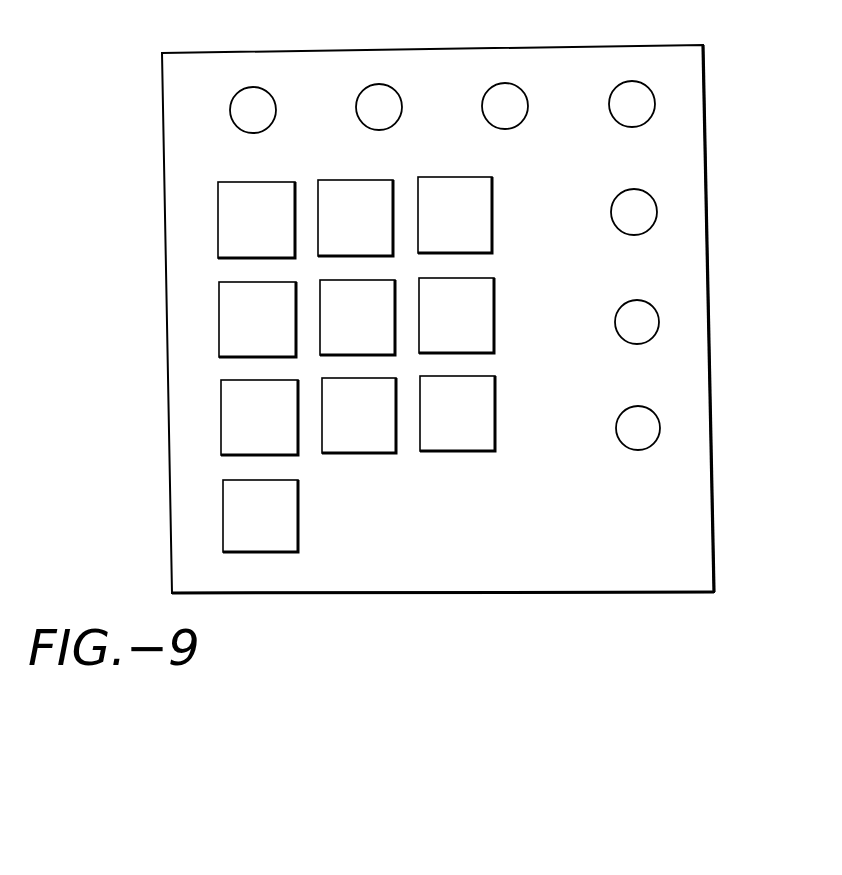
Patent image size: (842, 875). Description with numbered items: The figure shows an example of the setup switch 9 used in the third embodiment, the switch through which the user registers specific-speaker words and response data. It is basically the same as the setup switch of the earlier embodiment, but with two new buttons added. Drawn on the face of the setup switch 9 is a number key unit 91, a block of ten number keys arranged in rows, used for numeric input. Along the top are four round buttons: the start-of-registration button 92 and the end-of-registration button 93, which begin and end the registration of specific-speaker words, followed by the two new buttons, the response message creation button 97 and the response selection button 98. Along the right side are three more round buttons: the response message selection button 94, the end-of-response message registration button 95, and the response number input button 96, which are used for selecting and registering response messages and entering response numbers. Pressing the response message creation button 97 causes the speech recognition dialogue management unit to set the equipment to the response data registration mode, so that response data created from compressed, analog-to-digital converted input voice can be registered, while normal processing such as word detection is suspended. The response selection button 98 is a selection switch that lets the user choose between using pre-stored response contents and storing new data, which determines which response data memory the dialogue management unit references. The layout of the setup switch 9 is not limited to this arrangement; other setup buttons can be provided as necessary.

The setup switch 9 is at (705, 87).
The number key unit 91 is at (182, 474).
The start-of-registration button 92 is at (253, 87).
The end-of-registration button 93 is at (379, 84).
The response message selection button 94 is at (657, 212).
The end-of-response message registration button 95 is at (659, 322).
The response number input button 96 is at (660, 428).
The response message creation button 97 is at (505, 83).
The response selection button 98 is at (632, 81).